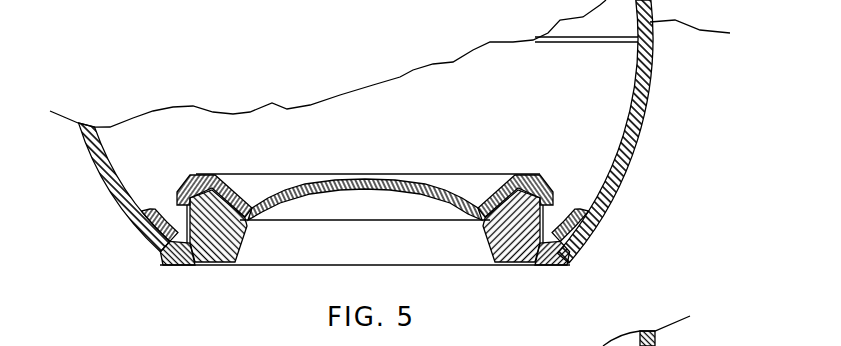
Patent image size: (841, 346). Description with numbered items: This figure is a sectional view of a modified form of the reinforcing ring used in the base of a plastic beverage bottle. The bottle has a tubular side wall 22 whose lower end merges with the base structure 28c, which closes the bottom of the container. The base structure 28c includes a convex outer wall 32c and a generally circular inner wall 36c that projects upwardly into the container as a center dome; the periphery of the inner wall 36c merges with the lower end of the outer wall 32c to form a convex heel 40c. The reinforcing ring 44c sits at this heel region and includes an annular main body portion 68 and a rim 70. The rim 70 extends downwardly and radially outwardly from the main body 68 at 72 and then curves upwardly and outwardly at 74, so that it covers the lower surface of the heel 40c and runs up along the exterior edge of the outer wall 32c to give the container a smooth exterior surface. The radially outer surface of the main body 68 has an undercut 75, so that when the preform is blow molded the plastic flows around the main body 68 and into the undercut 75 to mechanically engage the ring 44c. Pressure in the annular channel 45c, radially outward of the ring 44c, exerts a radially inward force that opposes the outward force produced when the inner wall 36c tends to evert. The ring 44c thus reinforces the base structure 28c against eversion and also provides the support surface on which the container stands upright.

The tubular side wall 22 is at (655, 23).
The base structure 28c is at (634, 201).
The outer wall 32c is at (650, 132).
The inner wall 36c is at (368, 182).
The heel 40c is at (577, 193).
The reinforcing ring 44c is at (237, 237).
The annular channel 45c is at (170, 221).
The annular main body portion 68 is at (500, 180).
The rim 70 is at (163, 265).
The downward and outward extension of rim 72 is at (183, 267).
The upward and outward curve of rim 74 is at (137, 237).
The undercut 75 is at (553, 213).